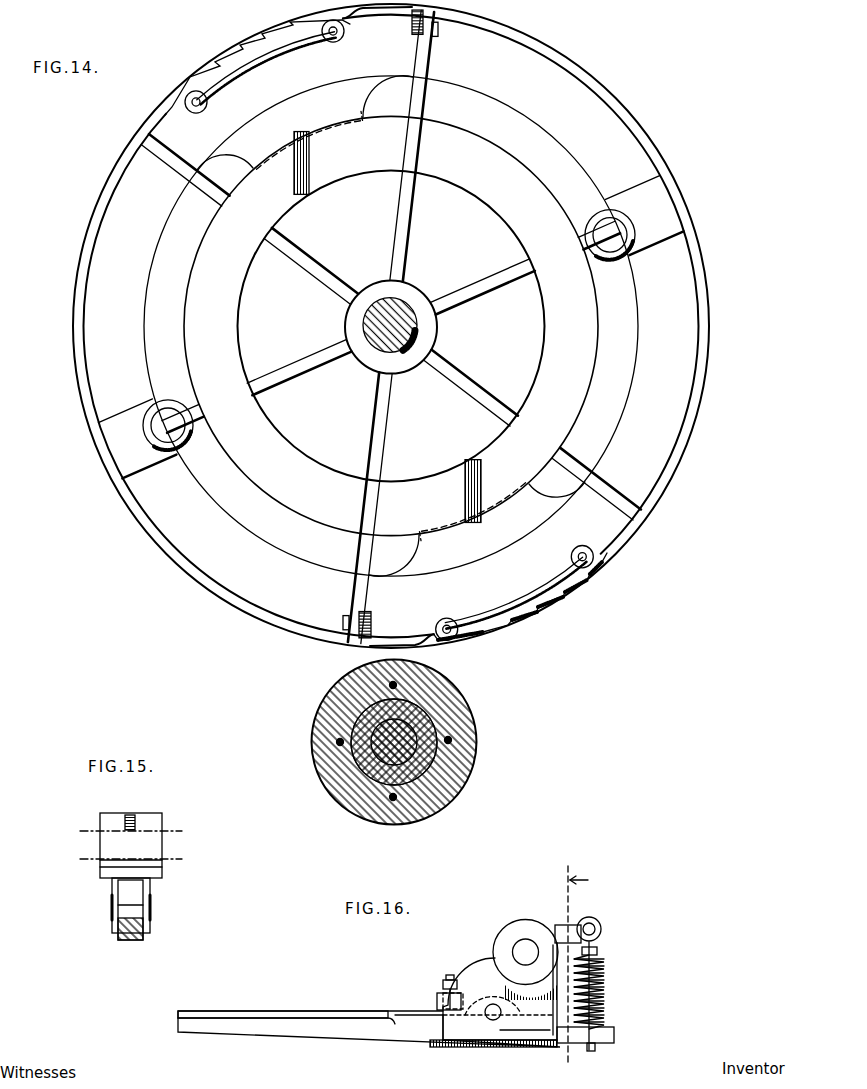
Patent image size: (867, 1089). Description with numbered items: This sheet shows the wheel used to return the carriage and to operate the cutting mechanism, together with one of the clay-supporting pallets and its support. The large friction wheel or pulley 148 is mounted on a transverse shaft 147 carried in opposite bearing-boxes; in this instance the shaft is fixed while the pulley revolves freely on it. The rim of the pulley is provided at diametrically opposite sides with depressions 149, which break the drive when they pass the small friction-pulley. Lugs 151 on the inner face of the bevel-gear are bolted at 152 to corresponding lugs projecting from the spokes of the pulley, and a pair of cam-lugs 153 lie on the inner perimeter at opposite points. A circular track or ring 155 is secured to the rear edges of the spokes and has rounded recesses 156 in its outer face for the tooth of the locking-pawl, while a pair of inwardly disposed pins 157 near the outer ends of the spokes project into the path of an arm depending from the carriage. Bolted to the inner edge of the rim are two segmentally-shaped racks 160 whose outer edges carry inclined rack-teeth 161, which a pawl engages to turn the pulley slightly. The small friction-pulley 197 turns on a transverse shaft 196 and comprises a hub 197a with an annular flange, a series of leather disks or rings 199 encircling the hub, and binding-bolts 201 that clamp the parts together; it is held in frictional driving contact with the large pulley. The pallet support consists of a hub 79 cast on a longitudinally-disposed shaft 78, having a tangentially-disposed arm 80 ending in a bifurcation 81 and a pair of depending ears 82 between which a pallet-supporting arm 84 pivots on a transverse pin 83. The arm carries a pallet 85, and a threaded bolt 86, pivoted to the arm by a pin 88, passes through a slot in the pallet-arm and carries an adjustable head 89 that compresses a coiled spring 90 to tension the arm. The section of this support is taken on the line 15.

In FIG. 14, the transverse shaft 147 is at (404, 312).
In FIG. 14, the large friction wheel or pulley 148 is at (588, 56).
In FIG. 14, the depressions 149 is at (386, 15).
In FIG. 14, the lugs 151 is at (414, 42).
In FIG. 14, the bolts 152 is at (439, 40).
In FIG. 14, the cam-lugs 153 is at (266, 168).
In FIG. 14, the circular track or ring 155 is at (224, 324).
In FIG. 14, the recesses 156 is at (305, 192).
In FIG. 14, the inwardly disposed pins 157 is at (611, 236).
In FIG. 14, the segmentally-shaped racks 160 is at (293, 50).
In FIG. 14, the inclined rack-teeth 161 is at (280, 40).
In FIG. 14, the transverse shaft 196 is at (420, 730).
In FIG. 14, the friction-pulley 197 is at (332, 790).
In FIG. 14, the hub 197a is at (430, 770).
In FIG. 14, the leather disks or rings 199 is at (470, 746).
In FIG. 14, the binding-bolts 201 is at (336, 742).
In FIG. 16, the longitudinally-disposed shaft 78 is at (525, 946).
In FIG. 15, the hub 79 is at (156, 852).
In FIG. 16, the hub 79 is at (500, 946).
In FIG. 15, the tangentially-disposed arm 80 is at (130, 816).
In FIG. 16, the tangentially-disposed arm 80 is at (560, 938).
In FIG. 16, the bifurcation 81 is at (590, 918).
In FIG. 15, the depending ears 82 is at (140, 892).
In FIG. 16, the depending ears 82 is at (536, 1032).
In FIG. 15, the transverse pin 83 is at (150, 912).
In FIG. 16, the transverse pin 83 is at (494, 1021).
In FIG. 15, the pallet-supporting arm 84 is at (131, 940).
In FIG. 16, the pallet-supporting arm 84 is at (412, 1036).
In FIG. 16, the pallet 85 is at (279, 1016).
In FIG. 16, the bolt 86 is at (592, 1050).
In FIG. 16, the pin 88 is at (601, 927).
In FIG. 16, the head 89 is at (597, 951).
In FIG. 16, the coiled spring 90 is at (604, 995).
In FIG. 16, the section line 15 is at (571, 963).